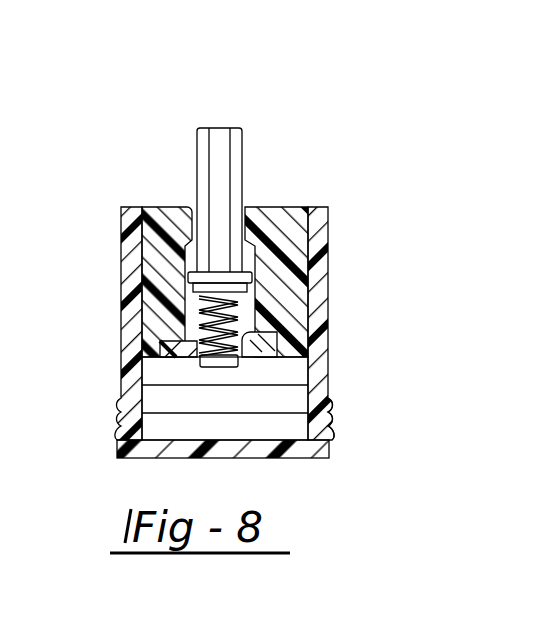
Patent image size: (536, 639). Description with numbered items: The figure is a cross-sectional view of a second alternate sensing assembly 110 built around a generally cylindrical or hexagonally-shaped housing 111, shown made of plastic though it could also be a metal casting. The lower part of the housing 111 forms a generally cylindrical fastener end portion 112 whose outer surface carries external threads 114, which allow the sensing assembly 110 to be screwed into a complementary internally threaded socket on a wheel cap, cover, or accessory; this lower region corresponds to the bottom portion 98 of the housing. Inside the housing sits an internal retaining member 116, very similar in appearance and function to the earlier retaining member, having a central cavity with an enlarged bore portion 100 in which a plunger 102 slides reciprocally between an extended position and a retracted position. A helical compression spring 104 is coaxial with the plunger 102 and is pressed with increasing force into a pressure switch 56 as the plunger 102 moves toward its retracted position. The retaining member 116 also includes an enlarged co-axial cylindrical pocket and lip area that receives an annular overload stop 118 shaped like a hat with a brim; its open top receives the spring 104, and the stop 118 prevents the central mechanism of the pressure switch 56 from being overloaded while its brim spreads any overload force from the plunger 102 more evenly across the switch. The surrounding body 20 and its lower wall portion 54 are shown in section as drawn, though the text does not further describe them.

The body 20 is at (222, 394).
The lower wall portion 54 is at (170, 420).
The pressure switch 56 is at (158, 373).
The bottom portion of housing 98 is at (310, 250).
The enlarged bore portion 100 is at (190, 245).
The plunger 102 is at (244, 137).
The helical compression spring 104 is at (330, 274).
The second alternate sensing assembly 110 is at (298, 124).
The housing 111 is at (106, 270).
The fastener end portion 112 is at (352, 430).
The external threads 114 is at (117, 440).
The retaining member 116 is at (276, 233).
The overload stop 118 is at (330, 343).